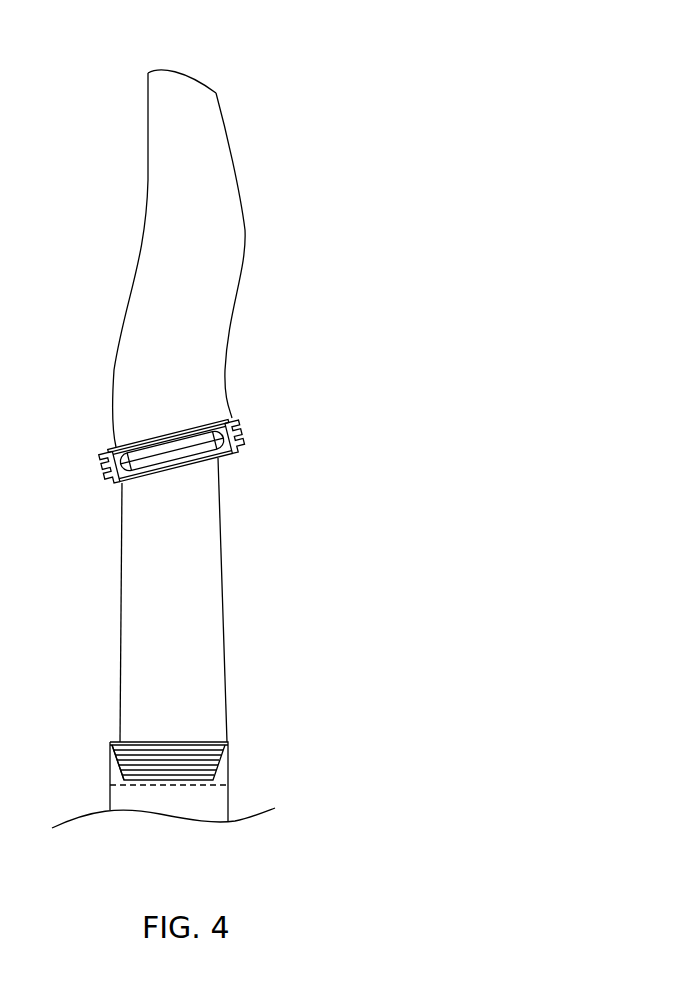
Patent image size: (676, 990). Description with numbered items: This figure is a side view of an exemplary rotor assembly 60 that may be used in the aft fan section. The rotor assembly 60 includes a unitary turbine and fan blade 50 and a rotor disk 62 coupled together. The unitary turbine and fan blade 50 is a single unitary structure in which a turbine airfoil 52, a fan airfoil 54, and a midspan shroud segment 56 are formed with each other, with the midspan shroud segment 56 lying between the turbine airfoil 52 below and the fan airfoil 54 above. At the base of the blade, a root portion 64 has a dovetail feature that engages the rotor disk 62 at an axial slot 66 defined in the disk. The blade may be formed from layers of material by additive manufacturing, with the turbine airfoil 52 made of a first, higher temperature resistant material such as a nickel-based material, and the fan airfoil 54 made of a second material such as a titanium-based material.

The unitary turbine and fan blade 50 is at (120, 100).
The rotor assembly 60 is at (300, 67).
The fan airfoil 54 is at (244, 221).
The midspan shroud segment 56 is at (239, 455).
The turbine airfoil 52 is at (222, 592).
The rotor disk 62 is at (228, 778).
The root portion 64 is at (113, 763).
The axial slot 66 is at (118, 780).